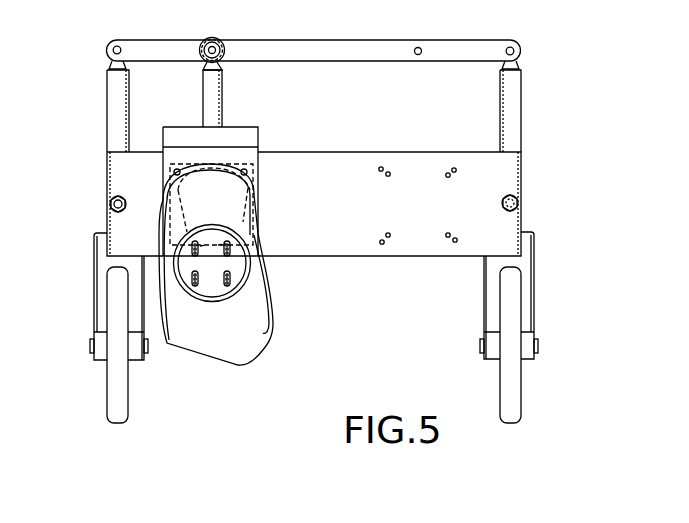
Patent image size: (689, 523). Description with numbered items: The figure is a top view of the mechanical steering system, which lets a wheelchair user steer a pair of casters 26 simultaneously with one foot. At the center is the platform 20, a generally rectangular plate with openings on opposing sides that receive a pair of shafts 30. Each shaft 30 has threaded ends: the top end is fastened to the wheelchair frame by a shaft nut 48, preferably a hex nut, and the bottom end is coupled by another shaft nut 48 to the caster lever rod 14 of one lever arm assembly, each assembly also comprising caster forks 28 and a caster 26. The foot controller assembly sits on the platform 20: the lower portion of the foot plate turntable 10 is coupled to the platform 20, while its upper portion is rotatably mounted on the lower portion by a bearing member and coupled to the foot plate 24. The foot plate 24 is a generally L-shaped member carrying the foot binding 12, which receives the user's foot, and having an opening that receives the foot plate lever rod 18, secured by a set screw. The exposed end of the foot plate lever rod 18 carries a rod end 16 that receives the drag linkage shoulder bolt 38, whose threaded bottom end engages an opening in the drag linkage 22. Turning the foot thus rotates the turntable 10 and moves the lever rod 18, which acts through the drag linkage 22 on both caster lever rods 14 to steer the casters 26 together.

The foot plate turntable 10 is at (253, 227).
The foot binding 12 is at (240, 360).
The caster lever rod 14 is at (113, 107).
The rod end 16 is at (106, 50).
The foot plate lever rod 18 is at (218, 102).
The platform 20 is at (336, 248).
The drag linkage 22 is at (345, 47).
The foot plate 24 is at (255, 137).
The casters 26 is at (113, 398).
The caster forks 28 is at (95, 317).
The shafts 30 is at (112, 213).
The drag linkage shoulder bolt 38 is at (208, 38).
The shaft nut 48 is at (112, 200).